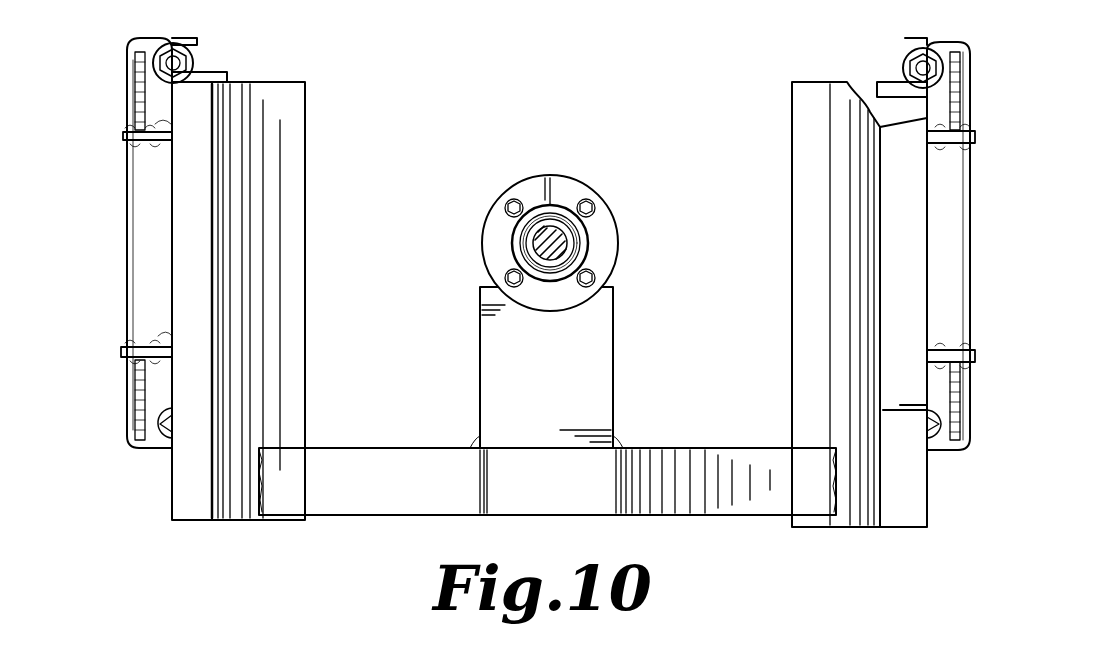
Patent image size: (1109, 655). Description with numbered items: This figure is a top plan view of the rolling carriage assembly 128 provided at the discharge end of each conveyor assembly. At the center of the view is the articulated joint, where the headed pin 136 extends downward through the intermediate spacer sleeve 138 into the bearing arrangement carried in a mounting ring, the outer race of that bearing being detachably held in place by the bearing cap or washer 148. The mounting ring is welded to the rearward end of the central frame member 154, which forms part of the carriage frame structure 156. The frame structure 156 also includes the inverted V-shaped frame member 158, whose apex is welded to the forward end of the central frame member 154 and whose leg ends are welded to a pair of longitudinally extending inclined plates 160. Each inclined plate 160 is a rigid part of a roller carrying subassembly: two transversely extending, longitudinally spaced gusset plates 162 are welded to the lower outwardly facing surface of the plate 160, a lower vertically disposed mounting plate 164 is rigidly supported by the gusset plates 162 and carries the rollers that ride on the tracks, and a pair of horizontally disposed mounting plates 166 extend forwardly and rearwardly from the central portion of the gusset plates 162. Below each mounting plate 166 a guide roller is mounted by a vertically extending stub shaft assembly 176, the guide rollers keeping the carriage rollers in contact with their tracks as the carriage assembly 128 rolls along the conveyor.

The rolling carriage assembly 128 is at (789, 538).
The pin 136 is at (548, 238).
The intermediate spacer sleeve 138 is at (526, 256).
The bearing cap or washer 148 is at (598, 250).
The central frame member 154 is at (610, 414).
The frame structure 156 is at (455, 528).
The inverted V-shaped frame member 158 is at (408, 462).
The inclined plates 160 is at (292, 220).
The gusset plates 162 is at (125, 143).
The mounting plate 164 is at (938, 447).
The mounting plates 166 is at (132, 66).
The stub shaft assembly 176 is at (175, 62).